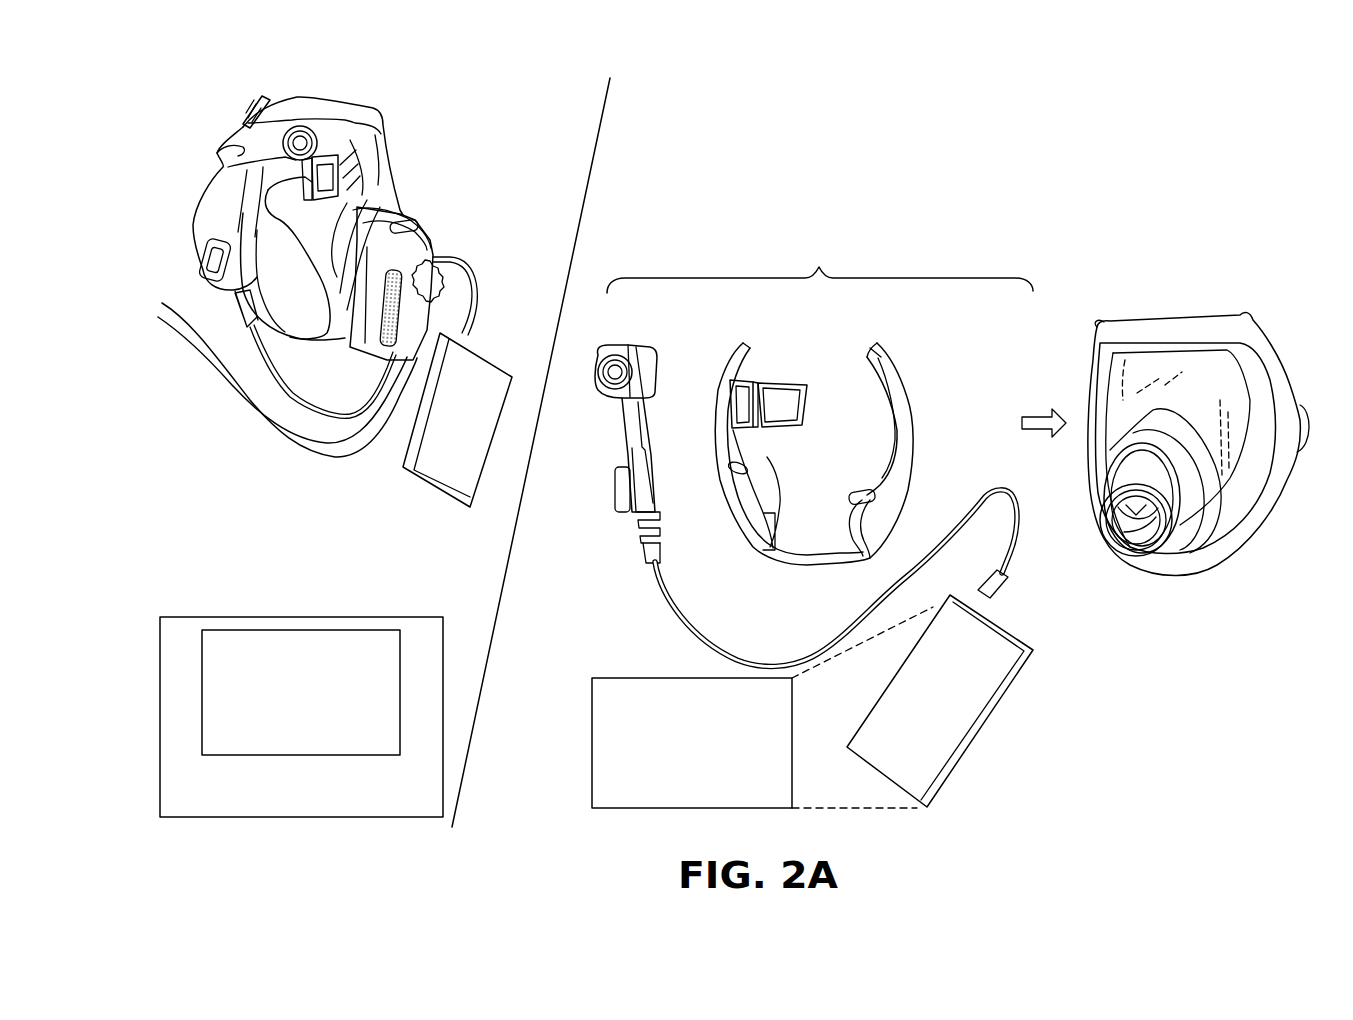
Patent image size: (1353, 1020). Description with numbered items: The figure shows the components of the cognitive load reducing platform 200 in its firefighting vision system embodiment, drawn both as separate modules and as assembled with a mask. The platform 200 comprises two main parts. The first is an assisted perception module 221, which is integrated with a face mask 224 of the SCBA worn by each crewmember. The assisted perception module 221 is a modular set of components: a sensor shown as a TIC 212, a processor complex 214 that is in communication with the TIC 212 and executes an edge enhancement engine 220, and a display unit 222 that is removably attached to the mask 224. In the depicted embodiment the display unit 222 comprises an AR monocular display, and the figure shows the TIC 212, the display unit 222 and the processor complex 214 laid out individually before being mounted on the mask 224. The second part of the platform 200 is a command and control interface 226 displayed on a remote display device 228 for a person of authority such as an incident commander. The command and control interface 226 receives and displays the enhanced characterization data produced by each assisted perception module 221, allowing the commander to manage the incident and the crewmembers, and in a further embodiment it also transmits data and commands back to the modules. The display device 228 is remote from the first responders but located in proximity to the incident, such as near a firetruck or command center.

The cognitive load reducing platform 200 is at (691, 56).
The TIC 212 is at (260, 115).
The processor complex 214 is at (482, 332).
The edge enhancement engine 220 is at (675, 789).
The assisted perception module 221 is at (820, 254).
The display unit 222 is at (326, 138).
The face mask 224 is at (1157, 320).
The command and control interface 226 is at (281, 741).
The display device 228 is at (280, 811).